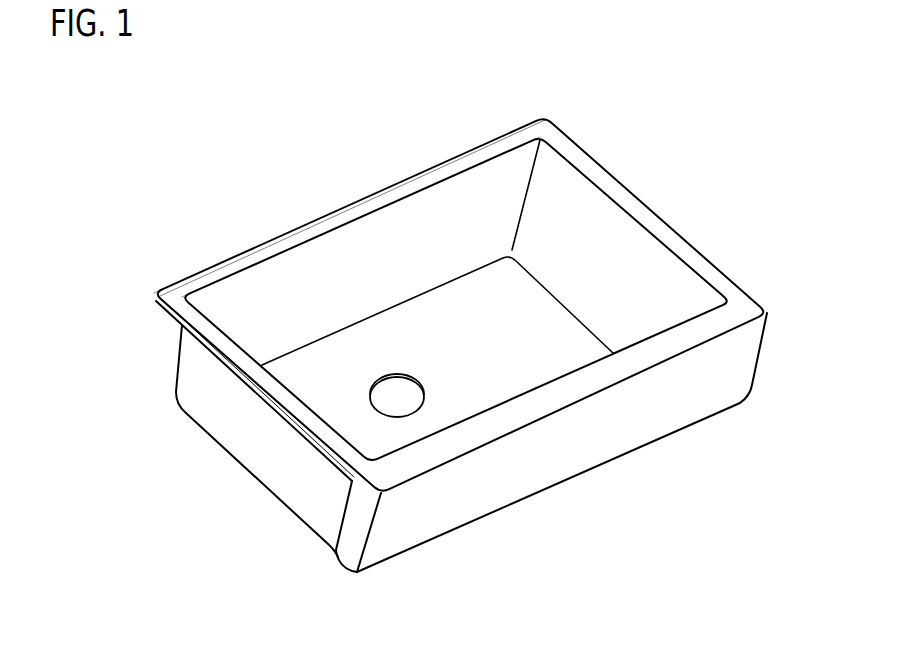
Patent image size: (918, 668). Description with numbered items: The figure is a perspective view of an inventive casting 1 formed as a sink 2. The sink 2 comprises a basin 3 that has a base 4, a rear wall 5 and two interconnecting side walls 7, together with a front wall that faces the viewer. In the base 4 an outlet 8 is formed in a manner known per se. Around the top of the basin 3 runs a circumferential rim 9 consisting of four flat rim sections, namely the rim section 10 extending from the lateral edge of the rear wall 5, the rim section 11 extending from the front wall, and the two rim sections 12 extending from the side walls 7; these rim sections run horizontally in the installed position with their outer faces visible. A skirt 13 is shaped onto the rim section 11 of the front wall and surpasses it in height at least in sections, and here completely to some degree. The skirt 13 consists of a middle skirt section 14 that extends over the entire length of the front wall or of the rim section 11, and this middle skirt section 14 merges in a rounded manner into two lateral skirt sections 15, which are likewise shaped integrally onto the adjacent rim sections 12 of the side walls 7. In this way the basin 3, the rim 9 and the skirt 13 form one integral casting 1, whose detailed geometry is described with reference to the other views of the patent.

The casting 1 is at (438, 349).
The sink 2 is at (480, 140).
The basin 3 is at (545, 325).
The base 4 is at (560, 348).
The rear wall 5 is at (330, 245).
The side walls 7 is at (590, 215).
The outlet 8 is at (400, 400).
The circumferential rim 9 is at (200, 252).
The rim section 10 is at (420, 165).
The rim section 11 is at (498, 420).
The rim sections 12 is at (727, 270).
The skirt 13 is at (578, 483).
The middle skirt section 14 is at (470, 485).
The lateral skirt sections 15 is at (355, 535).